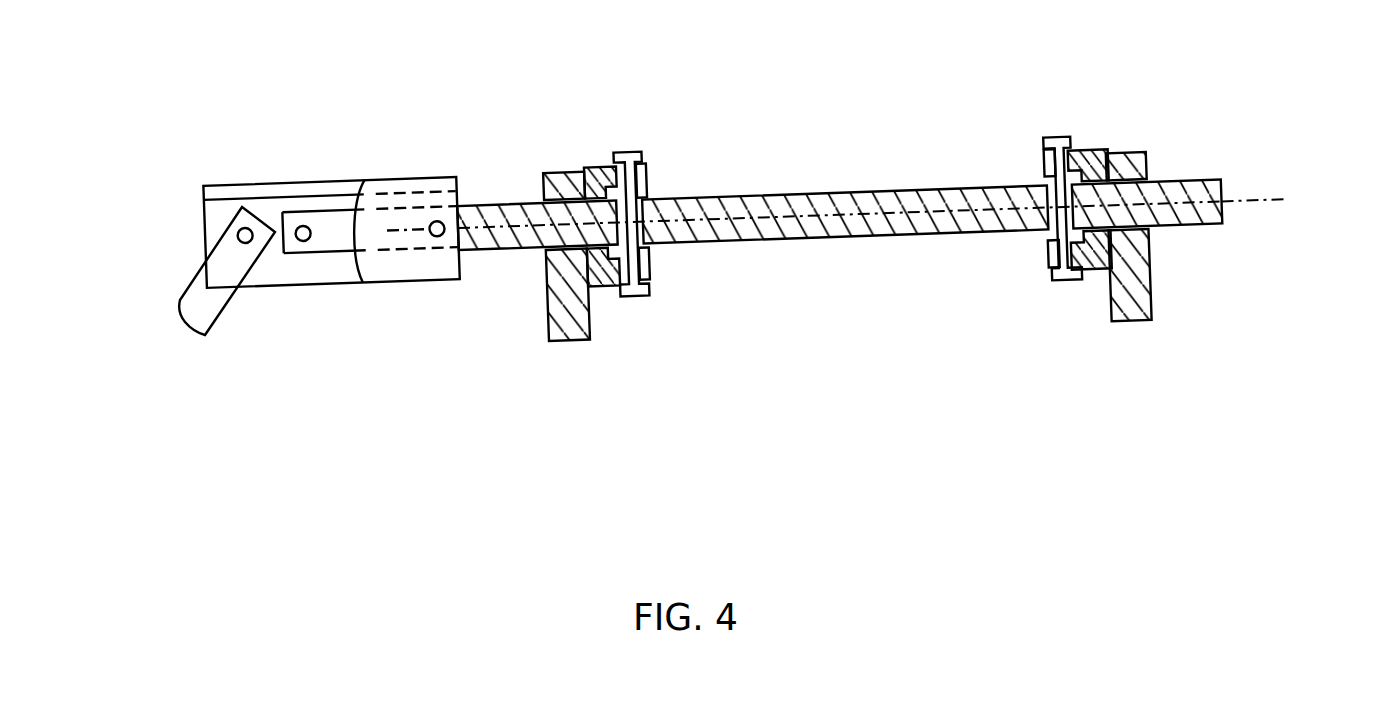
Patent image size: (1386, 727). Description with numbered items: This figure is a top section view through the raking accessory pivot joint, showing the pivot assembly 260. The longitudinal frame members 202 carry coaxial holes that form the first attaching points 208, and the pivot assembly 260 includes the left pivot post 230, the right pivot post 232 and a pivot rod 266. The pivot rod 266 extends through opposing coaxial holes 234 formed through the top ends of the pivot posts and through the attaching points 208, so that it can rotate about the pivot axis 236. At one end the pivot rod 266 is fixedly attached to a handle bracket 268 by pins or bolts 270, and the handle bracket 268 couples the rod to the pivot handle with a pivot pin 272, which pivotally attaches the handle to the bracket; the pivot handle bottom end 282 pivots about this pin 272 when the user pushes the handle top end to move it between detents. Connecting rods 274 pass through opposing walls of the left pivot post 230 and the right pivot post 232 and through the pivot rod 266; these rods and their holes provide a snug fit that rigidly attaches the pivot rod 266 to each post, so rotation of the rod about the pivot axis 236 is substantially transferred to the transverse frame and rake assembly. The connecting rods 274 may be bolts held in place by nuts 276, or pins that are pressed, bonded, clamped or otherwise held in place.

The longitudinal frame members 202 is at (588, 320).
The first attaching points 208 is at (595, 280).
The left pivot post 230 is at (626, 176).
The right pivot post 232 is at (1104, 152).
The coaxial holes 234 is at (575, 172).
The pivot axis 236 is at (1260, 197).
The pivot assembly 260 is at (845, 37).
The pivot rod 266 is at (850, 193).
The handle bracket 268 is at (277, 287).
The pins or bolts 270 is at (311, 236).
The pivot pin 272 is at (227, 242).
The connecting rods 274 is at (644, 248).
The nuts 276 is at (652, 158).
The pivot handle bottom end 282 is at (195, 305).